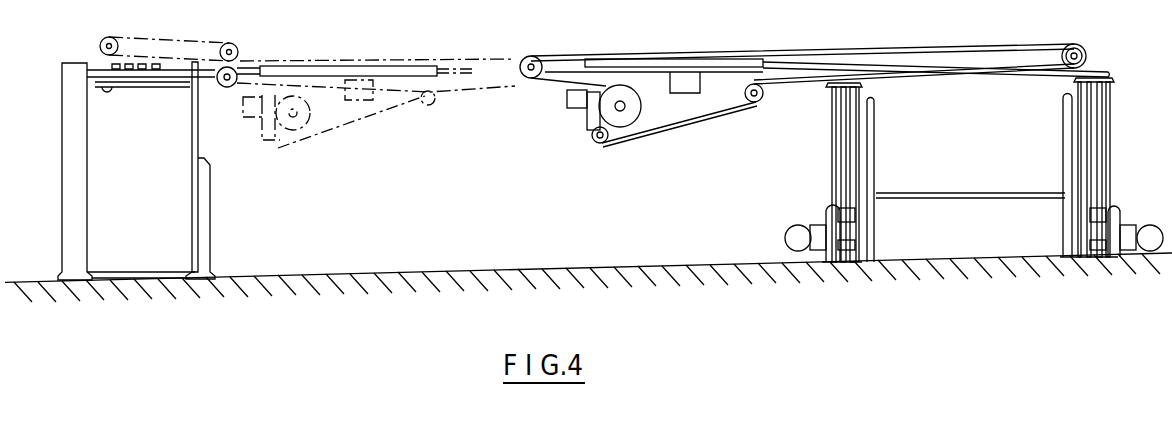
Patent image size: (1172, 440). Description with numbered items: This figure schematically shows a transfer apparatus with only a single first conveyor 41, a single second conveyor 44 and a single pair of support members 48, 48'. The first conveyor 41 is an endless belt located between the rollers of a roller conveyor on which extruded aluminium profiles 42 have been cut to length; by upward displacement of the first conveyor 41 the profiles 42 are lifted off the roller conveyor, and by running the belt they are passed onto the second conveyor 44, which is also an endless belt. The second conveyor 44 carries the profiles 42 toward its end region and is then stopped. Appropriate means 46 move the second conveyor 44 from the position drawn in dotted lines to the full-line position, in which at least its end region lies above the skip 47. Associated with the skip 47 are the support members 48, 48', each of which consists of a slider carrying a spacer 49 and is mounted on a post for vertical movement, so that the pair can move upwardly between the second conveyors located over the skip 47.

The first conveyor 41 is at (237, 67).
The extruded aluminium profiles 42 is at (158, 58).
The second conveyor 44 is at (647, 56).
The means 46 is at (583, 120).
The skip 47 is at (1100, 173).
The support member 48 is at (829, 172).
The support member 48' is at (1111, 167).
The spacer 49 is at (1080, 70).